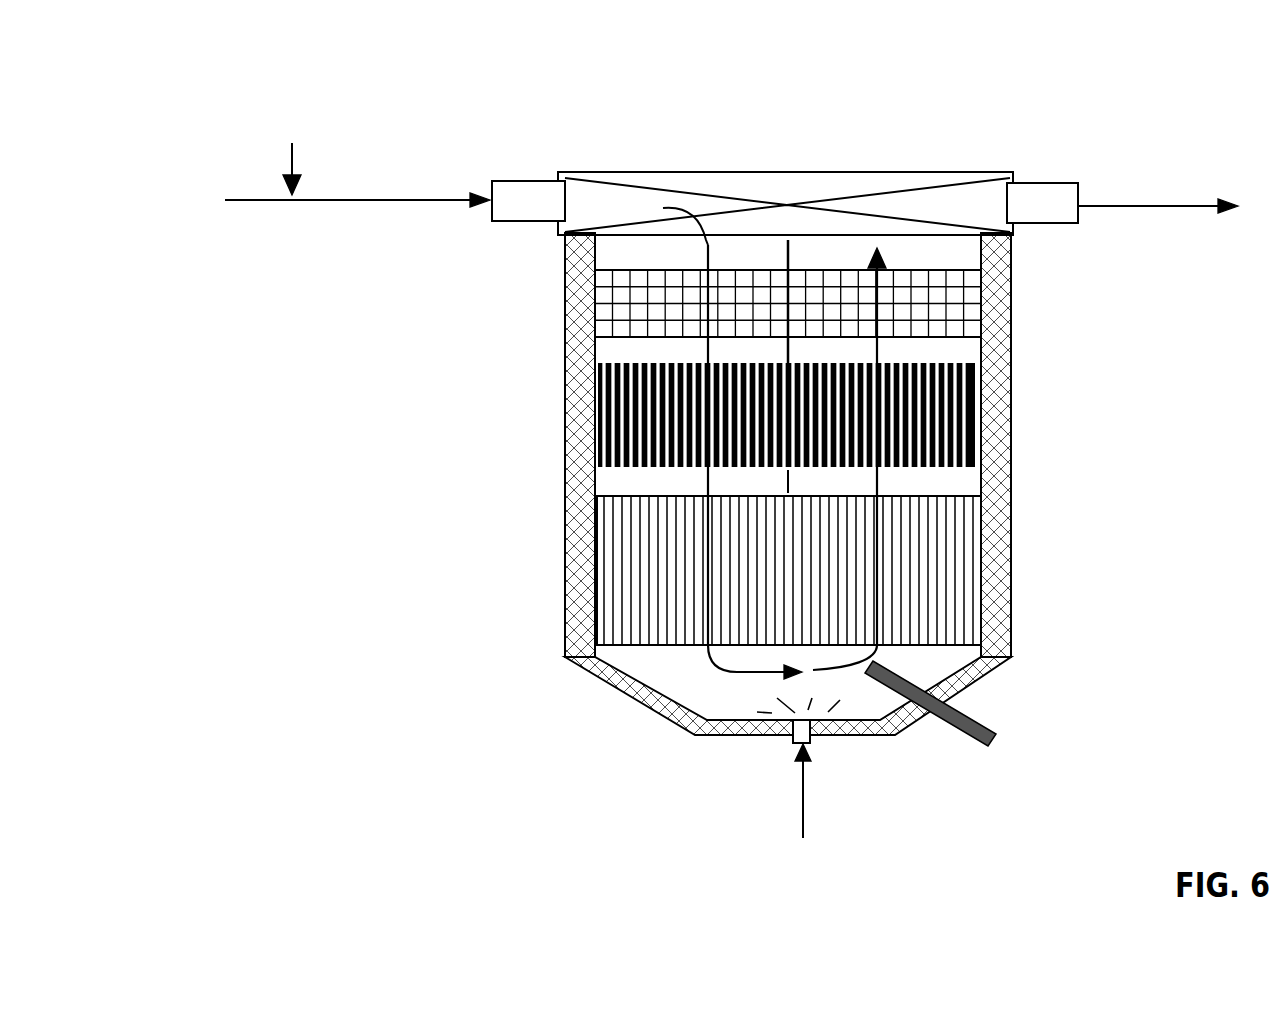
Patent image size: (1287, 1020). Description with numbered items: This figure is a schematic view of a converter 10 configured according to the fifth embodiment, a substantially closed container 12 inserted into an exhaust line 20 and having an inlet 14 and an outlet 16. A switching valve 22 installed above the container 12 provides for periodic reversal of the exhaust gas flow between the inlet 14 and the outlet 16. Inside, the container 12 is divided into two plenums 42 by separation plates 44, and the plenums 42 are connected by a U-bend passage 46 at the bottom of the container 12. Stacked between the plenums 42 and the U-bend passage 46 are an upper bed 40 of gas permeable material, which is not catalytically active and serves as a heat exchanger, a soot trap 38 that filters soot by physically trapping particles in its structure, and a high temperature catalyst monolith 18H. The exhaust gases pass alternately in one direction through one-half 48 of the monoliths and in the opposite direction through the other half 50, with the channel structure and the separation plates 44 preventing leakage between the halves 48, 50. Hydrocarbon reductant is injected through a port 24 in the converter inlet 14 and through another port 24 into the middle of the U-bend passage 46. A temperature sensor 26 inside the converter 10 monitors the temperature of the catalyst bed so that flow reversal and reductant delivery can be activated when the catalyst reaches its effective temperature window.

The converter 10 is at (537, 657).
The container 12 is at (995, 538).
The inlet 14 is at (660, 240).
The outlet 16 is at (927, 236).
The high temperature catalyst monolith 18H is at (647, 525).
The exhaust line 20 is at (255, 210).
The switching valve 22 is at (737, 175).
The port 24 is at (298, 176).
The temperature sensor 26 is at (977, 720).
The soot trap 38 is at (623, 405).
The upper bed 40 is at (940, 312).
The plenum 42 is at (680, 257).
The separation plate 44 is at (790, 360).
The U-bend passage 46 is at (680, 690).
The one-half of monoliths 48 is at (640, 310).
The other half of monoliths 50 is at (938, 567).